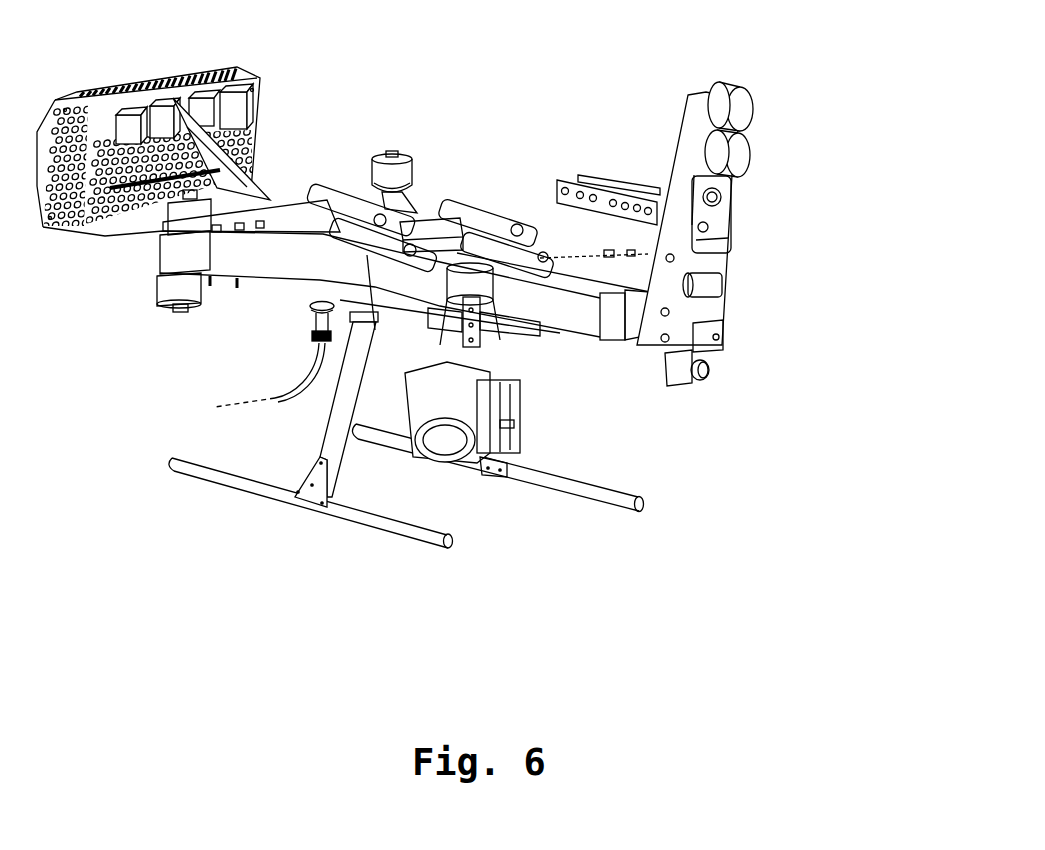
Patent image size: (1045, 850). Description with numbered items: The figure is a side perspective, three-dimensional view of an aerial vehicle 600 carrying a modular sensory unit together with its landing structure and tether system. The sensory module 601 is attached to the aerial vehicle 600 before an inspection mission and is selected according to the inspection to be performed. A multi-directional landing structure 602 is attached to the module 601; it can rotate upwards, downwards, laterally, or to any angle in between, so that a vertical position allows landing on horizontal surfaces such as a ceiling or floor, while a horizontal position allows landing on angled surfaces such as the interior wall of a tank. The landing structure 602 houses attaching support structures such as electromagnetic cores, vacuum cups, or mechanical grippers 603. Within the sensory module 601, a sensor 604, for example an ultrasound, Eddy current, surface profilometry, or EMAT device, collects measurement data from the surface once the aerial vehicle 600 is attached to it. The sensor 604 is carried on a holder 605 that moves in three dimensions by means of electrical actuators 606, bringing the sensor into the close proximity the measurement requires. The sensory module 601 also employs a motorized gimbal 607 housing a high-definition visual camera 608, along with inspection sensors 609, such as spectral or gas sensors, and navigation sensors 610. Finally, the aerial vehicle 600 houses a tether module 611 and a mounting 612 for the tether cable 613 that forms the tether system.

The aerial vehicle 600 is at (450, 180).
The sensory module 601 is at (654, 148).
The multi-directional landing structure 602 is at (612, 360).
The mechanical grippers 603 is at (760, 120).
The sensor 604 is at (747, 207).
The holder 605 is at (543, 193).
The electrical actuators 606 is at (577, 177).
The motorized gimbal 607 is at (540, 360).
The high-definition visual camera 608 is at (449, 476).
The inspection sensors 609 is at (740, 287).
The navigation sensors 610 is at (717, 375).
The tether module 611 is at (53, 247).
The mounting 612 is at (300, 316).
The tether cable 613 is at (205, 397).